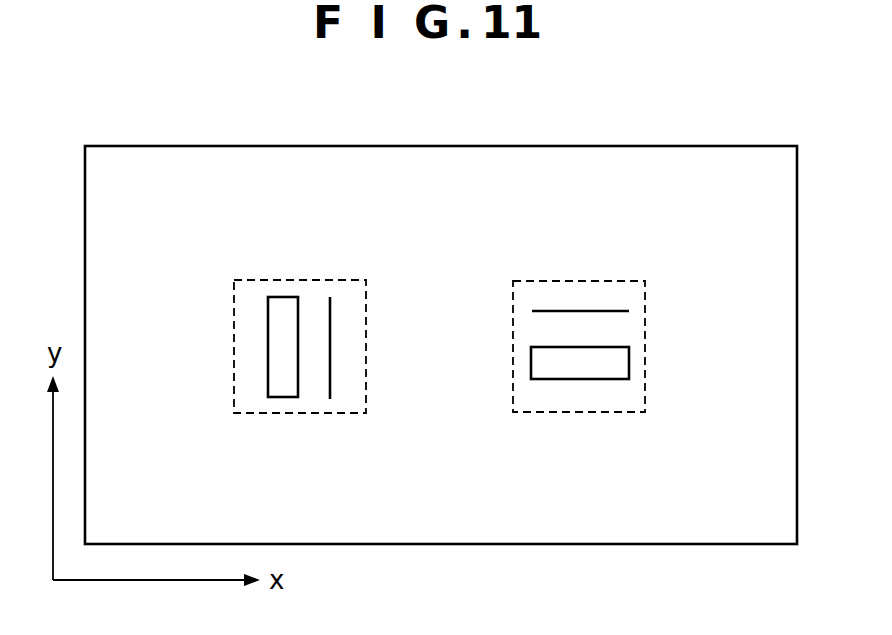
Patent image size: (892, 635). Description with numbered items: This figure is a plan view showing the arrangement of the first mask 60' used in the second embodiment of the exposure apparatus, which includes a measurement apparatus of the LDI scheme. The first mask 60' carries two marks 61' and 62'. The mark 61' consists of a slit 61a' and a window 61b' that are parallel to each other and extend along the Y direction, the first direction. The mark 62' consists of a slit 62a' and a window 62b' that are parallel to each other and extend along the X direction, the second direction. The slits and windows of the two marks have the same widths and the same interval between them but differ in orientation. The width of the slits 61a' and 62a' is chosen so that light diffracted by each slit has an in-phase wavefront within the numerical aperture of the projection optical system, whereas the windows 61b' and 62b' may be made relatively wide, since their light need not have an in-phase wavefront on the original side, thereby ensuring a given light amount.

The first mask 60' is at (441, 345).
The mark 61' is at (298, 317).
The slit 61a' is at (390, 348).
The window 61b' is at (221, 347).
The mark 62' is at (621, 345).
The slit 62a' is at (630, 296).
The window 62b' is at (580, 407).